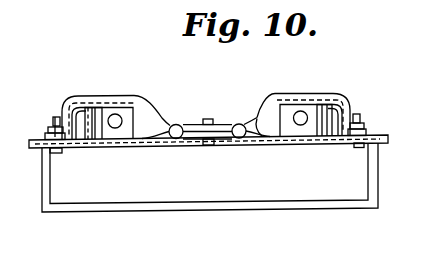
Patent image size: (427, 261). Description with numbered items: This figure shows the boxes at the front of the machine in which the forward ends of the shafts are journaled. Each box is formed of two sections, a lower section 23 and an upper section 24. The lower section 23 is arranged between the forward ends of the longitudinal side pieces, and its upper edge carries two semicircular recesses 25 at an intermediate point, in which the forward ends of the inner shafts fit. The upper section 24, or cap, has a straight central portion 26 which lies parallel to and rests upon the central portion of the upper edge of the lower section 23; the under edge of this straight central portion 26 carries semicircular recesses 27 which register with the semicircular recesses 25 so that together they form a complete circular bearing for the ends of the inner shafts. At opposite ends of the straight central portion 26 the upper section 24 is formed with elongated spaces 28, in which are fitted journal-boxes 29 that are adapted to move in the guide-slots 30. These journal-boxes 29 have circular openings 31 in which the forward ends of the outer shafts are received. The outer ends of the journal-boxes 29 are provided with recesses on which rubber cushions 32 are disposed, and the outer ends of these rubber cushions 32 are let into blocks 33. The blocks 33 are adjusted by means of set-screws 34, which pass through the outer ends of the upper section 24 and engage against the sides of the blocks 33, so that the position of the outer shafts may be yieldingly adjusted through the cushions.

The lower section 23 is at (180, 196).
The upper section 24 is at (271, 94).
The semicircular recesses 25 is at (178, 140).
The straight central portion 26 is at (204, 119).
The semicircular recesses 27 is at (175, 124).
The elongated spaces 28 is at (140, 114).
The journal-boxes 29 is at (111, 137).
The guide-slots 30 is at (98, 102).
The circular openings 31 is at (115, 114).
The rubber cushions 32 is at (97, 128).
The blocks 33 is at (78, 109).
The set-screws 34 is at (52, 118).